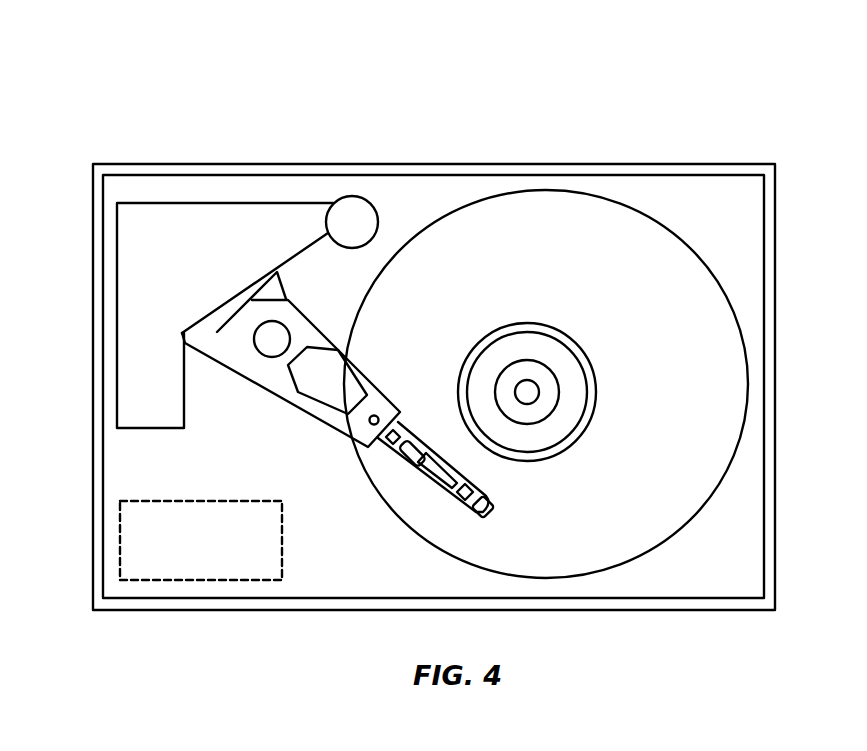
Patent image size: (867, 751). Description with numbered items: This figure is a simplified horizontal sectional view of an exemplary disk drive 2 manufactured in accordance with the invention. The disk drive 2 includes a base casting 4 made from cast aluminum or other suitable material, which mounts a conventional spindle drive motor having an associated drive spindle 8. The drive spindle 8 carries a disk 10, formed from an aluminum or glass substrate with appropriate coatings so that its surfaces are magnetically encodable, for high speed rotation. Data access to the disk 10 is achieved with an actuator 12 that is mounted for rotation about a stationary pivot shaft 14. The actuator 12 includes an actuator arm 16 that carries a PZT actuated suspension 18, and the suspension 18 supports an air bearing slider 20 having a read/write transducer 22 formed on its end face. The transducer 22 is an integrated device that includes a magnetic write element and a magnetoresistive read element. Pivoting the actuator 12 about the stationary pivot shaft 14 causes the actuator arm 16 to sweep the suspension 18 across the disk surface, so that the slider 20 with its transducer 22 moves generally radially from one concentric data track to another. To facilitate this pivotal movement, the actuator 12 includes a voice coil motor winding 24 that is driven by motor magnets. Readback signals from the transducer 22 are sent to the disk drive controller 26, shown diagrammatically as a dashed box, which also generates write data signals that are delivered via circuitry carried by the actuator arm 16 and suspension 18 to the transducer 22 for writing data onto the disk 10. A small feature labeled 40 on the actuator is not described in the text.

The disk drive 2 is at (100, 71).
The base casting 4 is at (235, 163).
The drive spindle 8 is at (529, 392).
The disk 10 is at (549, 273).
The actuator 12 is at (260, 378).
The stationary pivot shaft 14 is at (266, 330).
The actuator arm 16 is at (317, 415).
The PZT actuated suspension 18 is at (478, 528).
The air bearing slider 20 is at (503, 493).
The read/write transducer 22 is at (493, 512).
The voice coil motor winding 24 is at (283, 284).
The disk drive controller 26 is at (287, 577).
The flex connector 40 is at (376, 412).